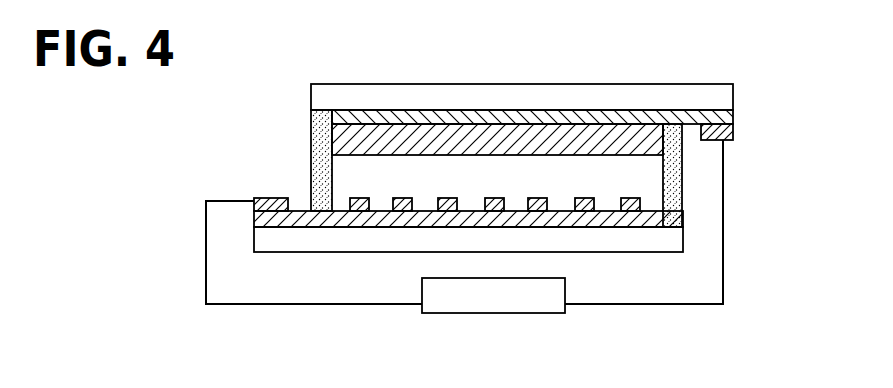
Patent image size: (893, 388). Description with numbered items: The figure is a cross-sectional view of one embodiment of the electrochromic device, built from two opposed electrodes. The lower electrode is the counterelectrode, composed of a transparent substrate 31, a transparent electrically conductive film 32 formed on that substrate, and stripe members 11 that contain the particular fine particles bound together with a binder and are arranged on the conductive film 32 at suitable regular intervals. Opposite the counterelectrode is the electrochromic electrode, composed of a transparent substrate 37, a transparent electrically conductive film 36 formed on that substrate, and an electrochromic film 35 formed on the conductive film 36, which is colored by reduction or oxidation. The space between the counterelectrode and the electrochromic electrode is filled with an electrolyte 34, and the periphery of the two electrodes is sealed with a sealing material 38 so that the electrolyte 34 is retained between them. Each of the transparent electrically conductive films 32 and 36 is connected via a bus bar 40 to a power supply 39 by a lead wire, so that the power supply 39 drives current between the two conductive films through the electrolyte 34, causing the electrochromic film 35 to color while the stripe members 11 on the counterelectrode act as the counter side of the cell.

The stripe members 11 is at (357, 198).
The transparent substrate 31 is at (377, 235).
The transparent electrically conductive film 32 is at (630, 212).
The electrolyte 34 is at (410, 185).
The electrochromic film 35 is at (483, 140).
The transparent electrically conductive film 36 is at (553, 118).
The transparent substrate 37 is at (625, 95).
The sealing material 38 is at (313, 138).
The power supply 39 is at (508, 295).
The bus bar 40 is at (733, 135).